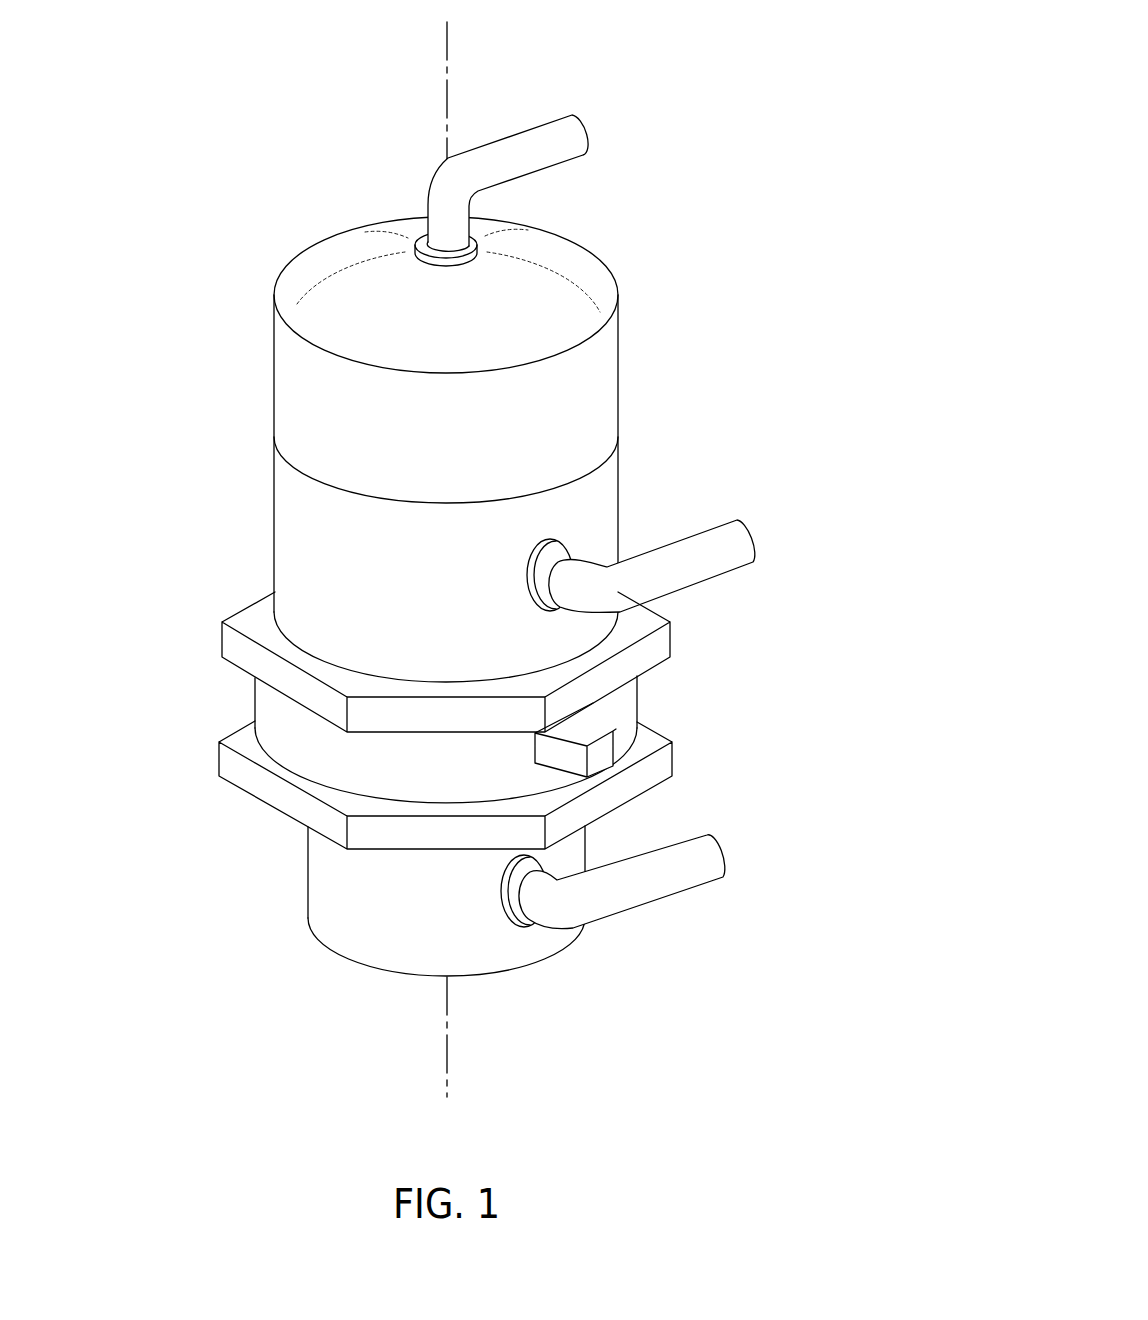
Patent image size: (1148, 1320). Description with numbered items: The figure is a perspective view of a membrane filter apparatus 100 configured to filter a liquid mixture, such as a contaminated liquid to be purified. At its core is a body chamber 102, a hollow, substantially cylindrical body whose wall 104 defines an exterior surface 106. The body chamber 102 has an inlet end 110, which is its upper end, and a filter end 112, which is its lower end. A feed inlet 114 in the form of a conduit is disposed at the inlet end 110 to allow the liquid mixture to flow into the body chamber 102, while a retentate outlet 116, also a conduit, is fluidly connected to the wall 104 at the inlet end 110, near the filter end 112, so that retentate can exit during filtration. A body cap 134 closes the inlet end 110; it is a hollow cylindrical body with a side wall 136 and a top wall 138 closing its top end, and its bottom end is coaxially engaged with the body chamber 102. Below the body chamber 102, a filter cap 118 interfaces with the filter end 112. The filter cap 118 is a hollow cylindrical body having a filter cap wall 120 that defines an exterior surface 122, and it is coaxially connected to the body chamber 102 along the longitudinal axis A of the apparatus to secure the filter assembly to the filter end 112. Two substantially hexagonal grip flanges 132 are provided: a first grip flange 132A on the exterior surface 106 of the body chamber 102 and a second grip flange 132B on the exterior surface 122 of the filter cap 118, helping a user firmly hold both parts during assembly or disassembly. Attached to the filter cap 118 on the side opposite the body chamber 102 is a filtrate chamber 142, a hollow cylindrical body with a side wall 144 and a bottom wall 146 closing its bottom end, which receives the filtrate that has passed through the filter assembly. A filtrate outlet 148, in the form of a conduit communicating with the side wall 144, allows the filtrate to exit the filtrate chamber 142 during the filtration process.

The membrane filter apparatus 100 is at (500, 555).
The longitudinal axis A is at (447, 58).
The body chamber 102 is at (457, 449).
The wall 104 is at (620, 483).
The exterior surface 106 is at (270, 545).
The inlet end 110 is at (571, 149).
The feed inlet 114 is at (542, 124).
The filter end 112 is at (687, 564).
The retentate outlet 116 is at (713, 550).
The filter cap 118 is at (500, 720).
The filter cap wall 120 is at (255, 682).
The exterior surface 122 is at (255, 692).
The grip flange 132 is at (562, 720).
The first grip flange 132A is at (673, 640).
The second grip flange 132B is at (513, 785).
The body cap 134 is at (328, 260).
The side wall 136 is at (275, 350).
The top wall 138 is at (283, 292).
The filtrate chamber 142 is at (613, 932).
The side wall 144 is at (380, 941).
The bottom wall 146 is at (513, 970).
The filtrate outlet 148 is at (553, 898).